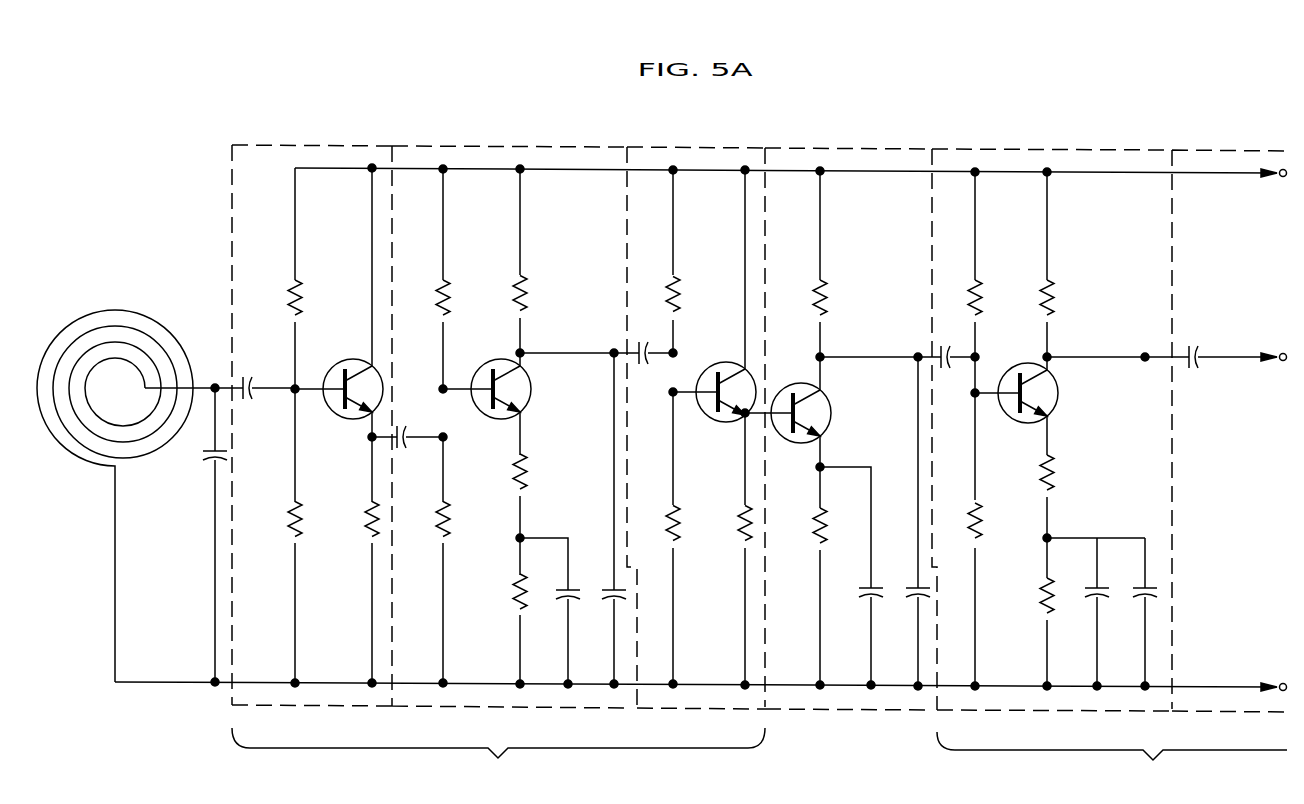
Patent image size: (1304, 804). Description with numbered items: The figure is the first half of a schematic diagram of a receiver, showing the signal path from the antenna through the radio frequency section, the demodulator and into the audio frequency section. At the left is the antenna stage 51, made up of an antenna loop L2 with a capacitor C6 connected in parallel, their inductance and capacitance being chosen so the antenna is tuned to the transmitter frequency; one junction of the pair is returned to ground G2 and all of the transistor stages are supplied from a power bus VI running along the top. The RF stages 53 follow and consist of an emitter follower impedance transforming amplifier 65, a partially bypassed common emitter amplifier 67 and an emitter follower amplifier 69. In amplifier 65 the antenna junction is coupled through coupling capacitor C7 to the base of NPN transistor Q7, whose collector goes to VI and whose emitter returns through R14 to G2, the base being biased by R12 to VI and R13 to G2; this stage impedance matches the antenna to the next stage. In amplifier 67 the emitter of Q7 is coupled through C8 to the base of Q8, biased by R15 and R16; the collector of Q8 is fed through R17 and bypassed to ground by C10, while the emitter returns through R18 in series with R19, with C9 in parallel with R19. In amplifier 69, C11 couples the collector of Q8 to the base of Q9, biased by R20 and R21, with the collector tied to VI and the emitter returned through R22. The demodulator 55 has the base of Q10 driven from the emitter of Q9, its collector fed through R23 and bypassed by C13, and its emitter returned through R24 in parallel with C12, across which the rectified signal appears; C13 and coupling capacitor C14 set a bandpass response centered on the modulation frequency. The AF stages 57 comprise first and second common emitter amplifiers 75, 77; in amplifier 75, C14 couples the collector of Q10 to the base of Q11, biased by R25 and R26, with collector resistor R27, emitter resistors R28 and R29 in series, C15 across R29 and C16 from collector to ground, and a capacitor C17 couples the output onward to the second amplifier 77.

The antenna stage 51 is at (126, 486).
The antenna loop L2 is at (176, 297).
The ground G2 is at (180, 684).
The power bus VI is at (484, 168).
The RF stages 53 is at (490, 470).
The demodulator 55 is at (838, 441).
The AF stages 57 is at (1102, 472).
The emitter follower impedance transforming amplifier 65 is at (303, 439).
The partially bypassed common emitter amplifier 67 is at (499, 440).
The emitter follower amplifier 69 is at (642, 440).
The first common emitter amplifier 75 is at (1045, 441).
The second common emitter amplifier 77 is at (1167, 445).
The capacitor C6 is at (205, 535).
The coupling capacitor C7 is at (255, 379).
The coupling capacitor C8 is at (409, 447).
The capacitor C9 is at (550, 613).
The capacitor C10 is at (604, 518).
The coupling capacitor C11 is at (596, 364).
The capacitor C12 is at (851, 578).
The capacitor C13 is at (875, 521).
The coupling capacitor C14 is at (946, 367).
The capacitor C15 is at (1096, 614).
The capacitor C16 is at (1135, 614).
The capacitor C17 is at (1167, 368).
The resistor R12 is at (309, 278).
The resistor R13 is at (276, 536).
The resistor R14 is at (355, 560).
The resistor R15 is at (456, 277).
The resistor R16 is at (459, 562).
The resistor R17 is at (533, 261).
The resistor R18 is at (535, 498).
The resistor R19 is at (502, 613).
The resistor R20 is at (689, 261).
The resistor R21 is at (658, 540).
The resistor R22 is at (730, 549).
The resistor R23 is at (835, 264).
The resistor R24 is at (805, 576).
The resistor R25 is at (990, 264).
The resistor R26 is at (961, 541).
The resistor R27 is at (1063, 264).
The resistor R28 is at (1063, 498).
The resistor R29 is at (1030, 614).
The NPN transistor Q7 is at (339, 303).
The NPN transistor Q8 is at (485, 404).
The NPN transistor Q9 is at (712, 305).
The NPN transistor Q10 is at (801, 412).
The NPN transistor Q11 is at (1014, 406).